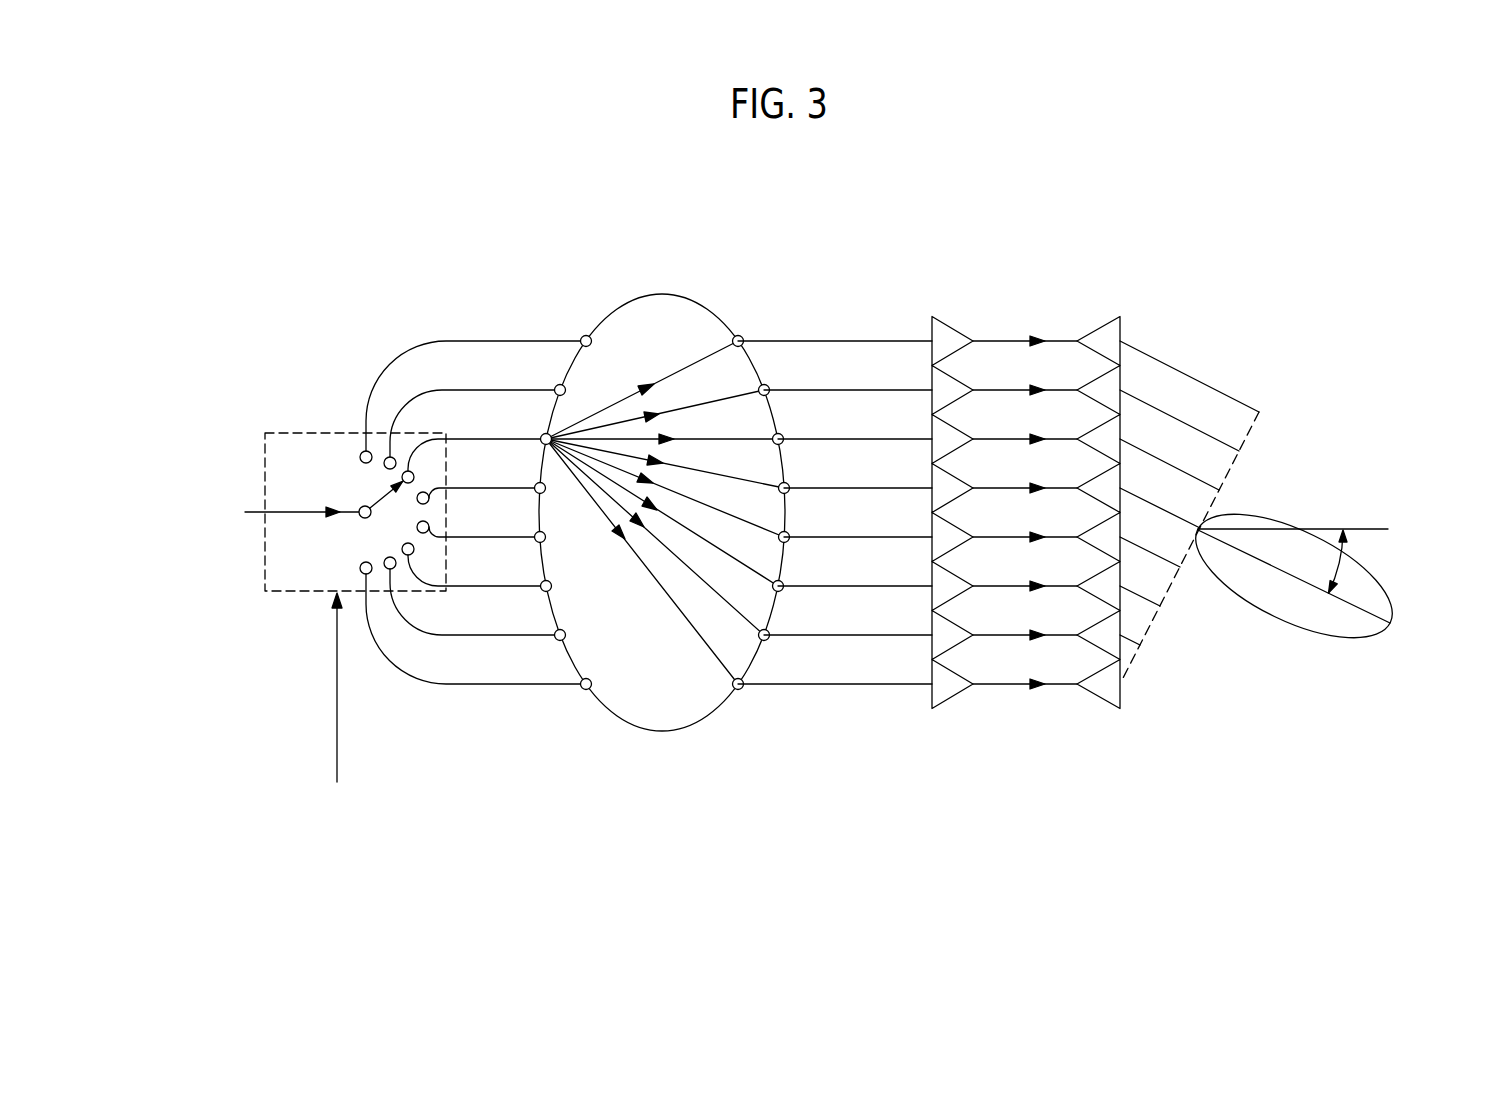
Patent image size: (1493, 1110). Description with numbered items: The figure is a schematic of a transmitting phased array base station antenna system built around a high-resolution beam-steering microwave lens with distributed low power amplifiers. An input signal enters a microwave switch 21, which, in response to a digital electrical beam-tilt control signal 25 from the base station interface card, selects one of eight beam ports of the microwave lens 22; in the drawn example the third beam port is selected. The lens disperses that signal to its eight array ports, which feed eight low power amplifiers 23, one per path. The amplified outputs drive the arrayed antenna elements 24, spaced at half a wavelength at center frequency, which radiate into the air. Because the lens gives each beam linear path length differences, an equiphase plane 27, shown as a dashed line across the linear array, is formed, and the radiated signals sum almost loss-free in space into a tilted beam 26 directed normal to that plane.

The microwave switch 21 is at (367, 497).
The microwave lens 22 is at (710, 312).
The low power amplifiers 23 is at (958, 330).
The arrayed antenna elements 24 is at (1168, 270).
The electrical beam control signal 25 is at (268, 782).
The beam 26 is at (1365, 583).
The equiphase plane 27 is at (1255, 425).